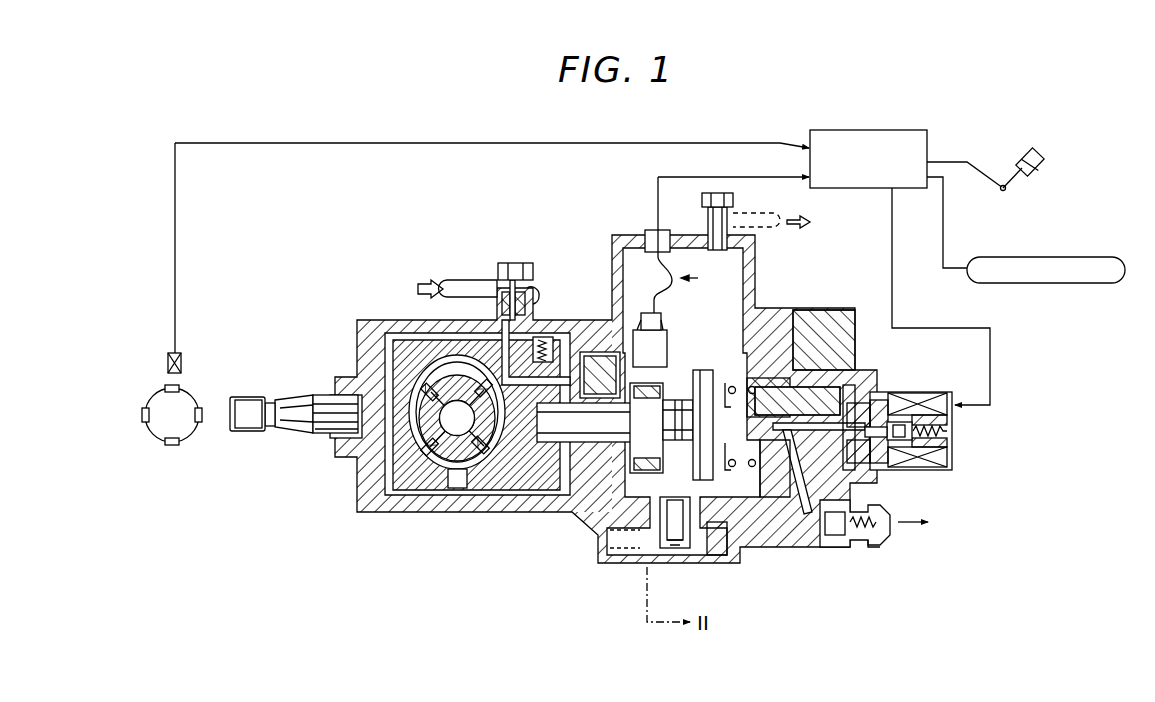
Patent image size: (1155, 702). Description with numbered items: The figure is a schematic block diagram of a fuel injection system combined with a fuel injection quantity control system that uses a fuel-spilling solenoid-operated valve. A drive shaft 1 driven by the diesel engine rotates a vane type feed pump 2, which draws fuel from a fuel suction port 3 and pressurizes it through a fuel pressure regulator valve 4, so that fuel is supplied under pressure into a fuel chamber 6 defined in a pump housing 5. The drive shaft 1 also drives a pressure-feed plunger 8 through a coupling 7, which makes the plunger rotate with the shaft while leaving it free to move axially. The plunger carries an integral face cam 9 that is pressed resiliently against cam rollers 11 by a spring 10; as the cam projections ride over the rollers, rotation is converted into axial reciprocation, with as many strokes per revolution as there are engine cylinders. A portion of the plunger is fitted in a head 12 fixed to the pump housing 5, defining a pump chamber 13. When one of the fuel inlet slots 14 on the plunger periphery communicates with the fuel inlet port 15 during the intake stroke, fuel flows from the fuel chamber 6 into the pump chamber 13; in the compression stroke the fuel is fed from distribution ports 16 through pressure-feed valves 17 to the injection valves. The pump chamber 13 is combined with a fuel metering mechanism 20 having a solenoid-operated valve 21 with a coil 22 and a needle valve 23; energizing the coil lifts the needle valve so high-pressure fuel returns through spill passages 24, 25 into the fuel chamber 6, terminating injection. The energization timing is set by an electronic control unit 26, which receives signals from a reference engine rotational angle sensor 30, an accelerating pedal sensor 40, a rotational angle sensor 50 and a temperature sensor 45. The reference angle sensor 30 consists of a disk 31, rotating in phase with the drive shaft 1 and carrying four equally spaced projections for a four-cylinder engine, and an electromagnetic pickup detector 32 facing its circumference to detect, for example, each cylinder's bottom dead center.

The drive shaft 1 is at (290, 440).
The vane type feed pump 2 is at (462, 462).
The fuel suction port 3 is at (468, 282).
The fuel pressure regulator valve 4 is at (541, 340).
The pump housing 5 is at (770, 535).
The fuel chamber 6 is at (728, 273).
The coupling 7 is at (675, 375).
The pressure-feed plunger 8 is at (733, 420).
The face cam 9 is at (705, 535).
The spring 10 is at (750, 470).
The cam rollers 11 is at (692, 538).
The head 12 is at (838, 312).
The pump chamber 13 is at (865, 420).
The fuel inlet slots 14 is at (818, 470).
The fuel inlet port 15 is at (848, 392).
The distribution ports 16 is at (778, 475).
The pressure-feed valves 17 is at (869, 548).
The fuel metering mechanism 20 is at (940, 413).
The solenoid-operated valve 21 is at (945, 474).
The coil 22 is at (912, 470).
The needle valve 23 is at (940, 402).
The spill passage 24 is at (900, 400).
The spill passage 25 is at (777, 408).
The electronic control unit 26 is at (914, 130).
The reference engine rotational angle sensor 30 is at (189, 419).
The disk 31 is at (187, 440).
The detector 32 is at (167, 363).
The accelerating pedal sensor 40 is at (1007, 193).
The temperature sensor 45 is at (1013, 284).
The rotational angle sensor 50 is at (632, 325).